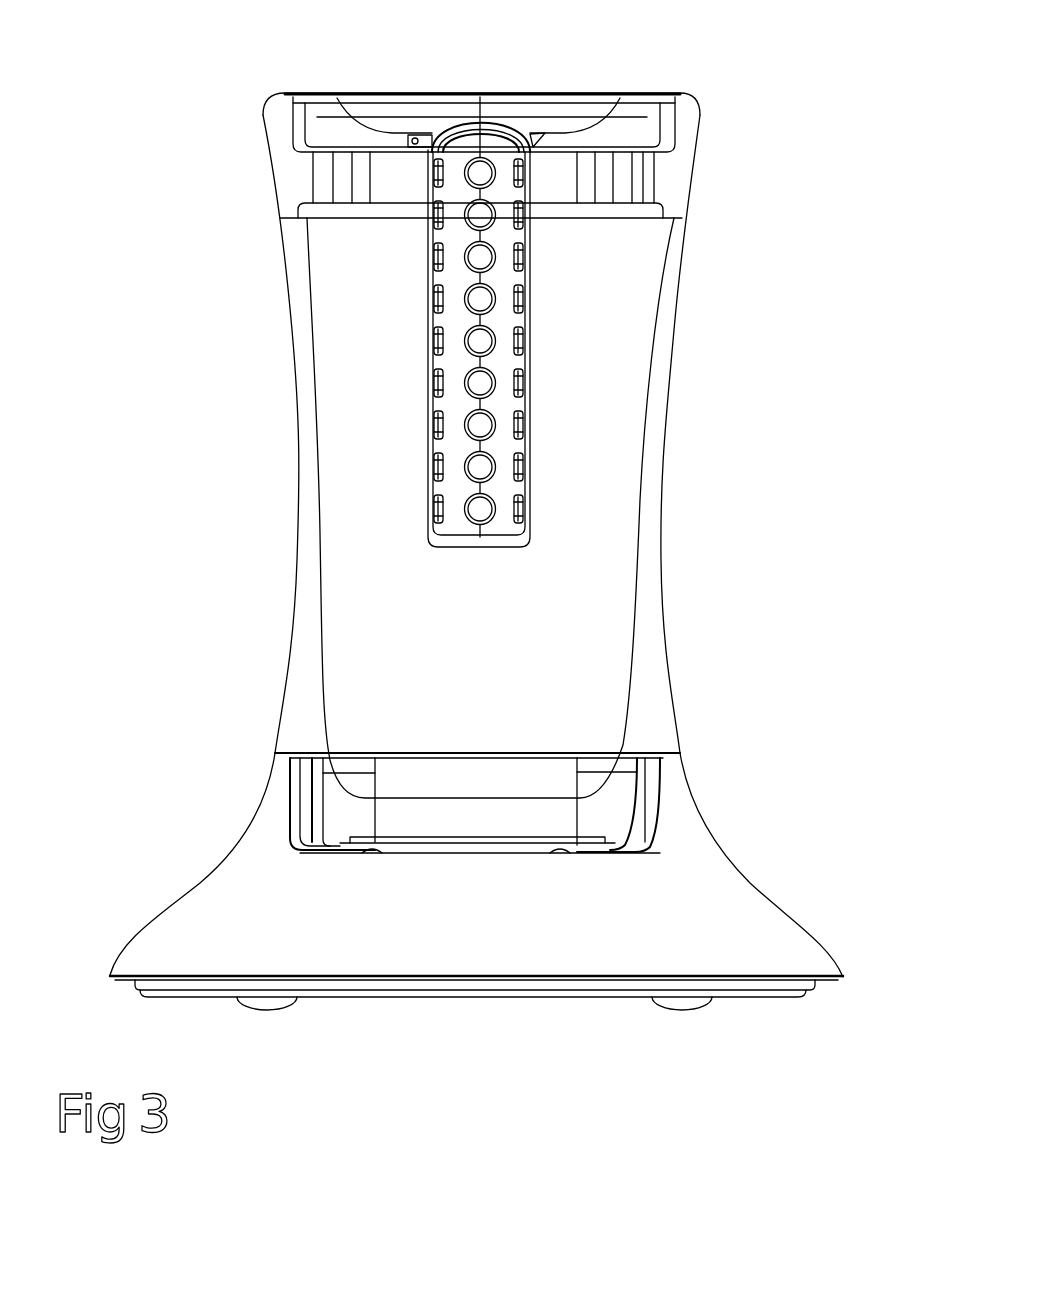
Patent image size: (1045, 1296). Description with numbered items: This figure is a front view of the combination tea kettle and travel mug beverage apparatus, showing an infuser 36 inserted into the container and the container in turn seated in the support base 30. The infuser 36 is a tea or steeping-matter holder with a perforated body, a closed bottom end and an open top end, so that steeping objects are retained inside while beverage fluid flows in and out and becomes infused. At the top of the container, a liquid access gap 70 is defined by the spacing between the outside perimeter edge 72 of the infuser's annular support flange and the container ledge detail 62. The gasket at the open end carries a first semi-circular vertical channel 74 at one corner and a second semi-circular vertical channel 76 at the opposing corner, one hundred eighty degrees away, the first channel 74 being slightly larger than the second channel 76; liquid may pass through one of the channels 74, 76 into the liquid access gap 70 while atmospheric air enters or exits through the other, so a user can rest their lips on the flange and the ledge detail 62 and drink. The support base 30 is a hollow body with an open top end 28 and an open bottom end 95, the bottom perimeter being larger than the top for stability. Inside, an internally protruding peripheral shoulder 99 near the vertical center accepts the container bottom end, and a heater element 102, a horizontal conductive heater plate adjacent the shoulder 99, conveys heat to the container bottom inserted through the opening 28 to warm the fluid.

The liquid access gap 70 is at (300, 88).
The outside perimeter edge 72 is at (303, 112).
The container ledge detail 62 is at (297, 133).
The first semi-circular vertical channel 74 is at (328, 182).
The second semi-circular vertical channel 76 is at (635, 196).
The infuser 36 is at (433, 547).
The open top end 28 is at (398, 823).
The internally protruding peripheral shoulder 99 is at (283, 790).
The support base 30 is at (178, 917).
The heater element 102 is at (417, 848).
The open bottom end 95 is at (362, 982).